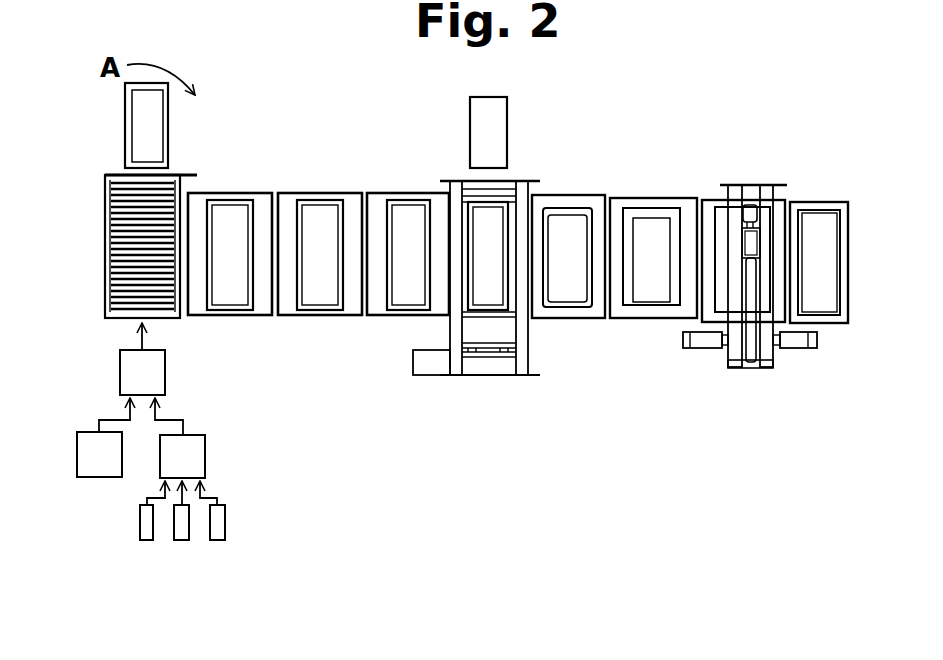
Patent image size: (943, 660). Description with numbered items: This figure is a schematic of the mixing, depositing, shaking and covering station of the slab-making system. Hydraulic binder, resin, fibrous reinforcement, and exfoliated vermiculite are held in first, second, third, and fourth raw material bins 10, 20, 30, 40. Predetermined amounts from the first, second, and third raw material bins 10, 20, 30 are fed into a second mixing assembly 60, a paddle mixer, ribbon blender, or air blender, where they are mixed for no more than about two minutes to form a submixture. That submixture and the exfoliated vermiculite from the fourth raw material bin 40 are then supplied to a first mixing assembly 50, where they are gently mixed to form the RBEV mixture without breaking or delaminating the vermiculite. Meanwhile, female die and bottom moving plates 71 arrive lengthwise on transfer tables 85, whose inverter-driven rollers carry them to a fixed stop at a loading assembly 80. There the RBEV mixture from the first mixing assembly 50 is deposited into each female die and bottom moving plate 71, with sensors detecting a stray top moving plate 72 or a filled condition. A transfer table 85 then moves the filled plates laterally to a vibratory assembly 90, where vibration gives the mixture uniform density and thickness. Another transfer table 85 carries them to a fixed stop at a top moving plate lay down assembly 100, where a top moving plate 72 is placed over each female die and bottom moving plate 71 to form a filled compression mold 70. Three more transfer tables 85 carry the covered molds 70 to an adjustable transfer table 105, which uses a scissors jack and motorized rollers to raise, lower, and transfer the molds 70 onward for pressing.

The first raw material bin 10 is at (148, 532).
The second raw material bin 20 is at (183, 532).
The third raw material bin 30 is at (218, 530).
The fourth raw material bin 40 is at (90, 462).
The first mixing assembly 50 is at (130, 375).
The second mixing assembly 60 is at (195, 458).
The compression mold 70 is at (568, 242).
The female die and bottom moving plate 71 is at (147, 118).
The top moving plate 72 is at (490, 130).
The loading assembly 80 is at (98, 257).
The transfer table 85 is at (257, 190).
The vibratory assembly 90 is at (323, 331).
The top moving plate lay down assembly 100 is at (487, 386).
The adjustable transfer table 105 is at (832, 334).